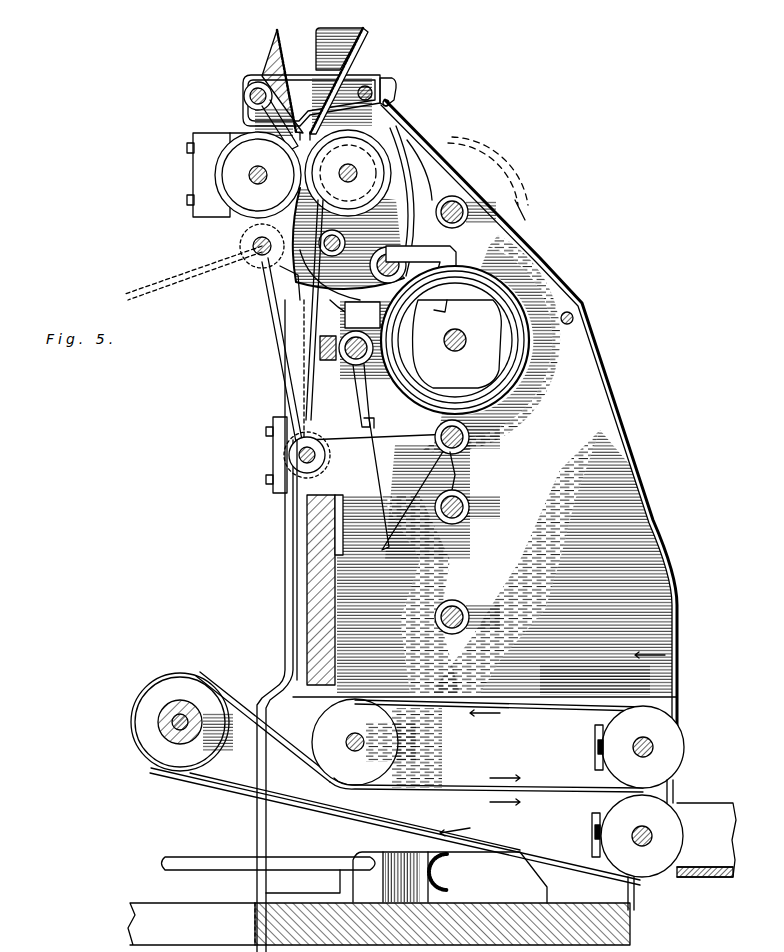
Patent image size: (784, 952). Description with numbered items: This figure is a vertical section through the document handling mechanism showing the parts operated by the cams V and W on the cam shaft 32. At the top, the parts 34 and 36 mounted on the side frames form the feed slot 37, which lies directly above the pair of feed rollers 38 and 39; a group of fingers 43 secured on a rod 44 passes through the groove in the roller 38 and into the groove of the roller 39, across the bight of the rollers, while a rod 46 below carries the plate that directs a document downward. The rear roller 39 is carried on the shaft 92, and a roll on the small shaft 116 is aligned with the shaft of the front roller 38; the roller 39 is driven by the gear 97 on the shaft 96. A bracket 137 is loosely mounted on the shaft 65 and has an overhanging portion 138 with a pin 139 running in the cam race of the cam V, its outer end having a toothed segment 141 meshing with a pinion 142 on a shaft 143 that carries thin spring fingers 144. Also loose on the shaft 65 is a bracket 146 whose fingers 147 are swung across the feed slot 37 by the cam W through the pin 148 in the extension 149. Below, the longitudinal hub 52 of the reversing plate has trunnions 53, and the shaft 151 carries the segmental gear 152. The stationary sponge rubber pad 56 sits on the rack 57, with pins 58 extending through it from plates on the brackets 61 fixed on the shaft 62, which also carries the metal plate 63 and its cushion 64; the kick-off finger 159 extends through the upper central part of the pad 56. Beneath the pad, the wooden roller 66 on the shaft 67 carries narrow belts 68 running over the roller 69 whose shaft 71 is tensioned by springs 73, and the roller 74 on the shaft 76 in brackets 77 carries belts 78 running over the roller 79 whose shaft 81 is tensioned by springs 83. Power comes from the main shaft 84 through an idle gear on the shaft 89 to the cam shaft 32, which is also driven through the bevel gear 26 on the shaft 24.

The shaft 24 is at (205, 870).
The bevel gear 26 is at (446, 872).
The cam shaft 32 is at (455, 352).
The part constituting feed slot 34 is at (355, 34).
The part constituting feed slot 36 is at (288, 58).
The feed slot 37 is at (305, 141).
The feed roller 38 is at (232, 172).
The feed roller 39 is at (400, 160).
The fingers 43 is at (272, 114).
The rod 44 is at (250, 95).
The rod 46 is at (324, 244).
The longitudinal hub 52 is at (300, 458).
The trunnions 53 is at (298, 468).
The pad 56 is at (312, 604).
The rack 57 is at (333, 588).
The pins 58 is at (303, 556).
The brackets 61 is at (358, 404).
The shaft 62 is at (352, 366).
The metal plate 63 is at (340, 360).
The cushion 64 is at (318, 350).
The shaft 65 is at (452, 205).
The wooden roller 66 is at (318, 722).
The shaft 67 is at (352, 735).
The narrow belts 68 is at (488, 778).
The roller 69 is at (676, 746).
The shaft 71 is at (640, 740).
The springs 73 is at (595, 750).
The roller 74 is at (150, 728).
The shaft 76 is at (175, 730).
The brackets 77 is at (226, 730).
The narrow belts 78 is at (236, 782).
The roller 79 is at (654, 872).
The shaft 81 is at (652, 834).
The springs 83 is at (594, 845).
The main shaft 84 is at (466, 610).
The shaft 89 is at (472, 512).
The shaft 92 is at (352, 170).
The shaft 96 is at (470, 212).
The gear 97 is at (508, 182).
The small shaft 116 is at (258, 167).
The bracket 137 is at (282, 292).
The overhanging portion 138 is at (445, 254).
The pin 139 is at (456, 312).
The toothed segment 141 is at (274, 278).
The pinion 142 is at (266, 262).
The shaft 143 is at (250, 244).
The thin spring fingers 144 is at (305, 336).
The bracket 146 is at (404, 138).
The fingers 147 is at (372, 78).
The pin 148 is at (480, 278).
The extension 149 is at (452, 248).
The shaft 151 is at (472, 441).
The segmental gear 152 is at (455, 468).
The kick-off finger 159 is at (374, 428).
The cam V is at (428, 341).
The cam W is at (510, 284).